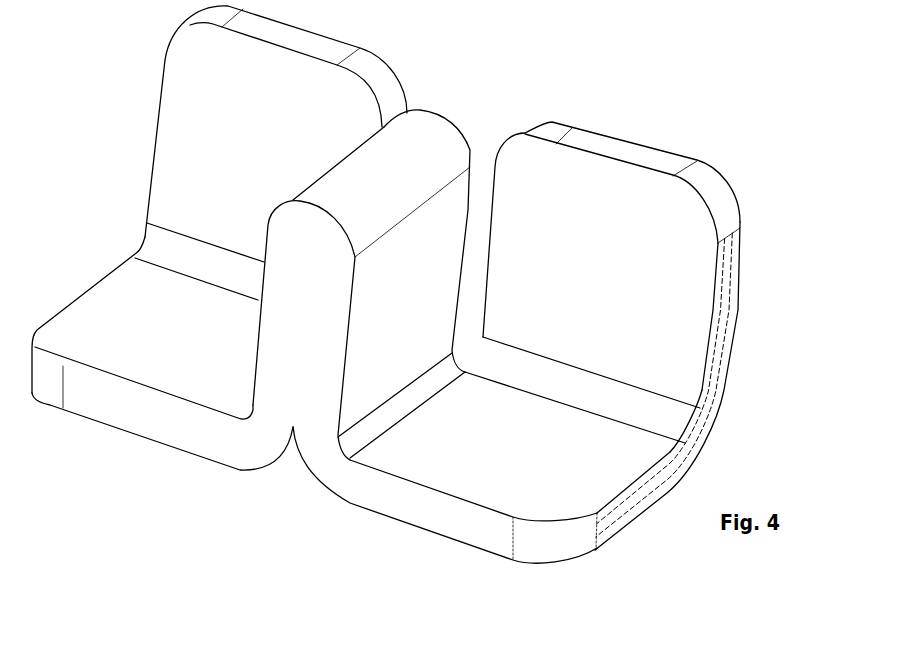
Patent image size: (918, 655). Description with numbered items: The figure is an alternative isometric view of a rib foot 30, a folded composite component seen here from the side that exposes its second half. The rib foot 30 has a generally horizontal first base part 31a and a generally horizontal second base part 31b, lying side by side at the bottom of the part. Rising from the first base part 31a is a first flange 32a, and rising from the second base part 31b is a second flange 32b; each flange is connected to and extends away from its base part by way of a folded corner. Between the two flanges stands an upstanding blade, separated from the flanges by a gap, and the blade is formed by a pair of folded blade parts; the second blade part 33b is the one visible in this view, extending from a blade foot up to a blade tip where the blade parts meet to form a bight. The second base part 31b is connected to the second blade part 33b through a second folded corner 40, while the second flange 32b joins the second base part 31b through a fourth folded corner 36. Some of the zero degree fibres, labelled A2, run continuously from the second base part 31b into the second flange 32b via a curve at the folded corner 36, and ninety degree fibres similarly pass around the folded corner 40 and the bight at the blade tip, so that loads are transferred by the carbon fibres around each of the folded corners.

The rib foot 30 is at (152, 468).
The first base part 31a is at (198, 350).
The second base part 31b is at (560, 468).
The first flange 32a is at (255, 167).
The second flange 32b is at (620, 280).
The second blade part 33b is at (401, 276).
The fourth folded corner 36 is at (675, 427).
The second folded corner 40 is at (410, 393).
The 0 degree fibres A2 is at (727, 300).